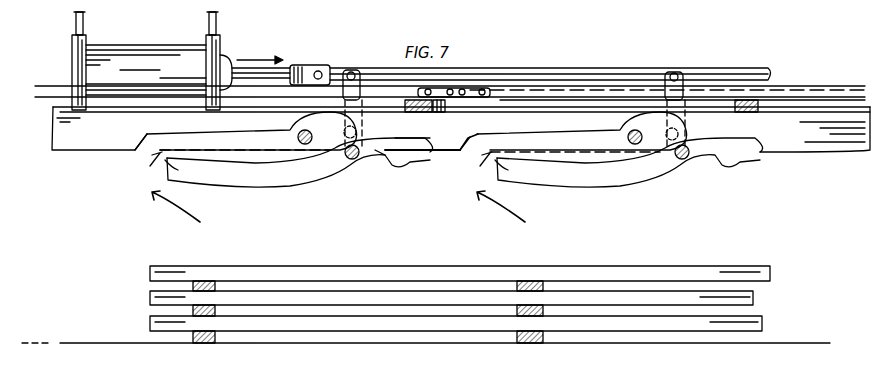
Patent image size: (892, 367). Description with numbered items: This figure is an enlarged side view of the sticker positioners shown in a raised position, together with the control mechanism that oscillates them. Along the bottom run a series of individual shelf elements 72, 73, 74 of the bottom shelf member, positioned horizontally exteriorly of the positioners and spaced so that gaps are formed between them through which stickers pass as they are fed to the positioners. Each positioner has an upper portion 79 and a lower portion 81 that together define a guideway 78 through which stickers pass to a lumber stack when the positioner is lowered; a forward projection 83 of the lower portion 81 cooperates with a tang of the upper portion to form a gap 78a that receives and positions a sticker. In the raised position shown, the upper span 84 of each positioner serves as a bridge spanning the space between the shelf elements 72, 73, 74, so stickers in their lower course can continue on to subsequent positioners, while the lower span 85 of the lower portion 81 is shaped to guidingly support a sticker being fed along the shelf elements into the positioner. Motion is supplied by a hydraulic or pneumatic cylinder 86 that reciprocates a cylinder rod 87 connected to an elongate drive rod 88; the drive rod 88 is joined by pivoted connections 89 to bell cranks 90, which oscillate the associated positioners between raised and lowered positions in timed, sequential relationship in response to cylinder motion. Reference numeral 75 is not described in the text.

The shelf element 72 is at (780, 130).
The shelf element 73 is at (430, 150).
The shelf element 74 is at (118, 140).
The pivot pin 75 is at (385, 150).
The guideway 78 is at (243, 175).
The gap 78a is at (305, 160).
The upper portion 79 is at (568, 130).
The lower portion 81 is at (210, 175).
The forward projection 83 is at (172, 170).
The upper span 84 is at (730, 60).
The lower span 85 is at (378, 165).
The cylinder 86 is at (172, 62).
The cylinder rod 87 is at (286, 64).
The drive rod 88 is at (558, 72).
The pivoted connection 89 is at (348, 72).
The bell crank 90 is at (352, 96).